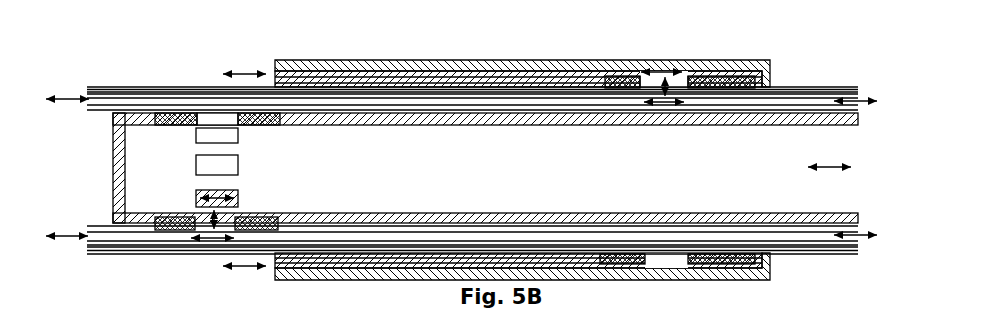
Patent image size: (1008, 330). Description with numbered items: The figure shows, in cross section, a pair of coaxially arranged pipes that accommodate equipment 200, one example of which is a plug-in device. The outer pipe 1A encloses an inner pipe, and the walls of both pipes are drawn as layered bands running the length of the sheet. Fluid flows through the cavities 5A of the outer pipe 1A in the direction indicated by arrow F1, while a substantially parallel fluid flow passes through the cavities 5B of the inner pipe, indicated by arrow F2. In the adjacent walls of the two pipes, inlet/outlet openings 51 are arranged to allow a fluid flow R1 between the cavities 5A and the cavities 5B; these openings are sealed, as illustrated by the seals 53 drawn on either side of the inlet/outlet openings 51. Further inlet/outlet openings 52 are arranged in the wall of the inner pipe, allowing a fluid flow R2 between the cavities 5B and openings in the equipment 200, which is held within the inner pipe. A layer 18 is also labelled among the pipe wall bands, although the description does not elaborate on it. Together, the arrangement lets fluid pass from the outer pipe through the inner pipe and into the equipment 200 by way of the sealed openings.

The outer pipe 1A is at (375, 62).
The cavities of outer pipe 5A is at (308, 73).
The cavities of inner pipe 5B is at (105, 100).
The electrode layer 18 is at (150, 90).
The seals 53 is at (612, 82).
The inlet/outlet openings 51 is at (652, 87).
The fluid flow between cavities R1 is at (668, 88).
The equipment 200 is at (113, 158).
The inlet/outlet openings 52 is at (227, 222).
The fluid flow between cavities and equipment R2 is at (210, 222).
The fluid flow in outer pipe cavities F1 is at (244, 162).
The fluid flow in inner pipe cavities F2 is at (461, 160).